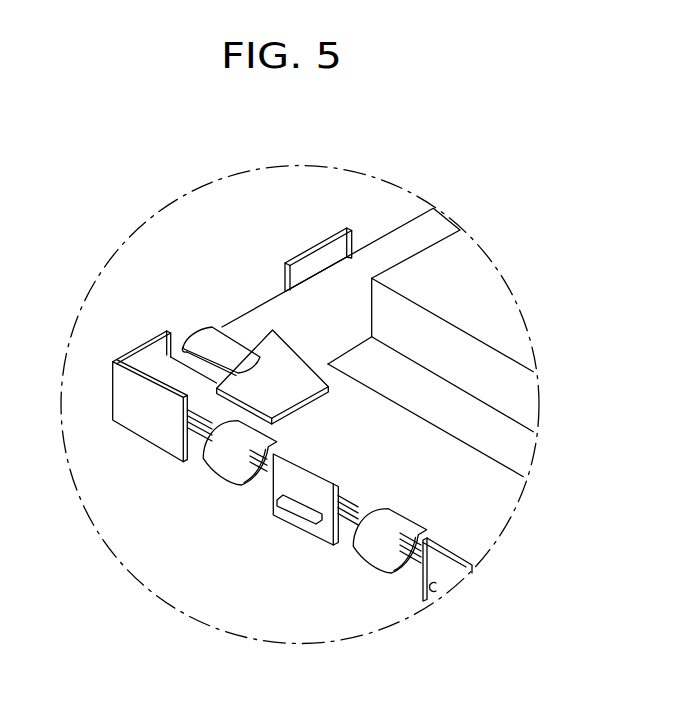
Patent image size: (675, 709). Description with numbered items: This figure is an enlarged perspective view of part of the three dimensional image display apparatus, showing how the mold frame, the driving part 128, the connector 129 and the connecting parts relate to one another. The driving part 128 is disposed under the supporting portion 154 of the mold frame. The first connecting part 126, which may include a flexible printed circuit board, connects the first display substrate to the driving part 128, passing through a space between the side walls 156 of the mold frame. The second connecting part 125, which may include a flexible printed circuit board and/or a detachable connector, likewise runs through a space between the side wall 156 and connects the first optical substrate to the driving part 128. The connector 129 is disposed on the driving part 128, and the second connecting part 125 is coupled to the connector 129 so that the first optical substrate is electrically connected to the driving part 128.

The second connecting part 125 is at (212, 340).
The first connecting part 126 is at (228, 462).
The driving part 128 is at (482, 507).
The connector 129 is at (273, 363).
The supporting portion 154 is at (262, 466).
The side wall 156 is at (323, 530).